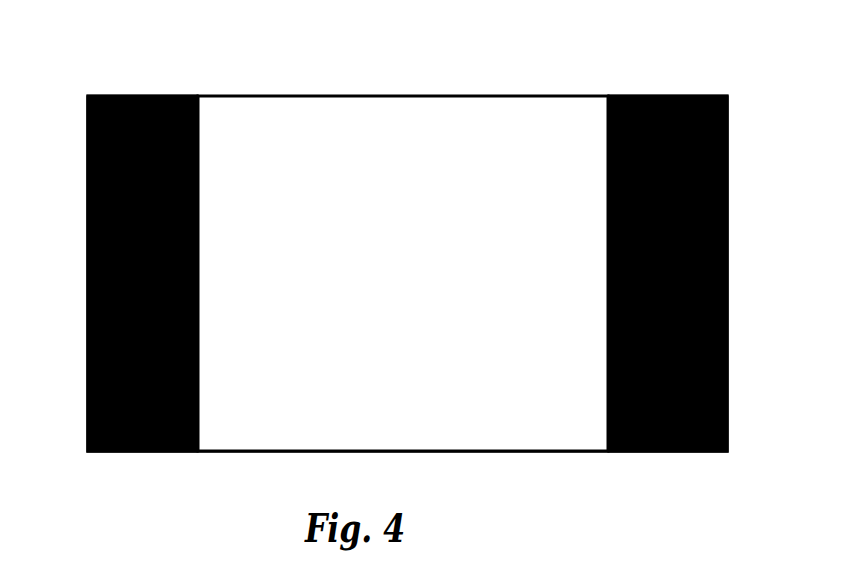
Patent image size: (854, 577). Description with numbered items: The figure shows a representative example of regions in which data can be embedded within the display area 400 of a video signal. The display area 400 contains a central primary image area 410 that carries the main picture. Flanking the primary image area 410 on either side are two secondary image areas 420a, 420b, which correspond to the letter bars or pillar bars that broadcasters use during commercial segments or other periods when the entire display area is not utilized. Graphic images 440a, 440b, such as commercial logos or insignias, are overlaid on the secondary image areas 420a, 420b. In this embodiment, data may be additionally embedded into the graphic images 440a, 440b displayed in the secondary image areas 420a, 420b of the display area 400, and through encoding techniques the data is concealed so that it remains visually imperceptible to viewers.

The display area 400 is at (82, 59).
The primary image area 410 is at (560, 96).
The secondary image area 420a is at (728, 411).
The secondary image area 420b is at (87, 151).
The graphic image 440a is at (728, 205).
The graphic image 440b is at (88, 400).